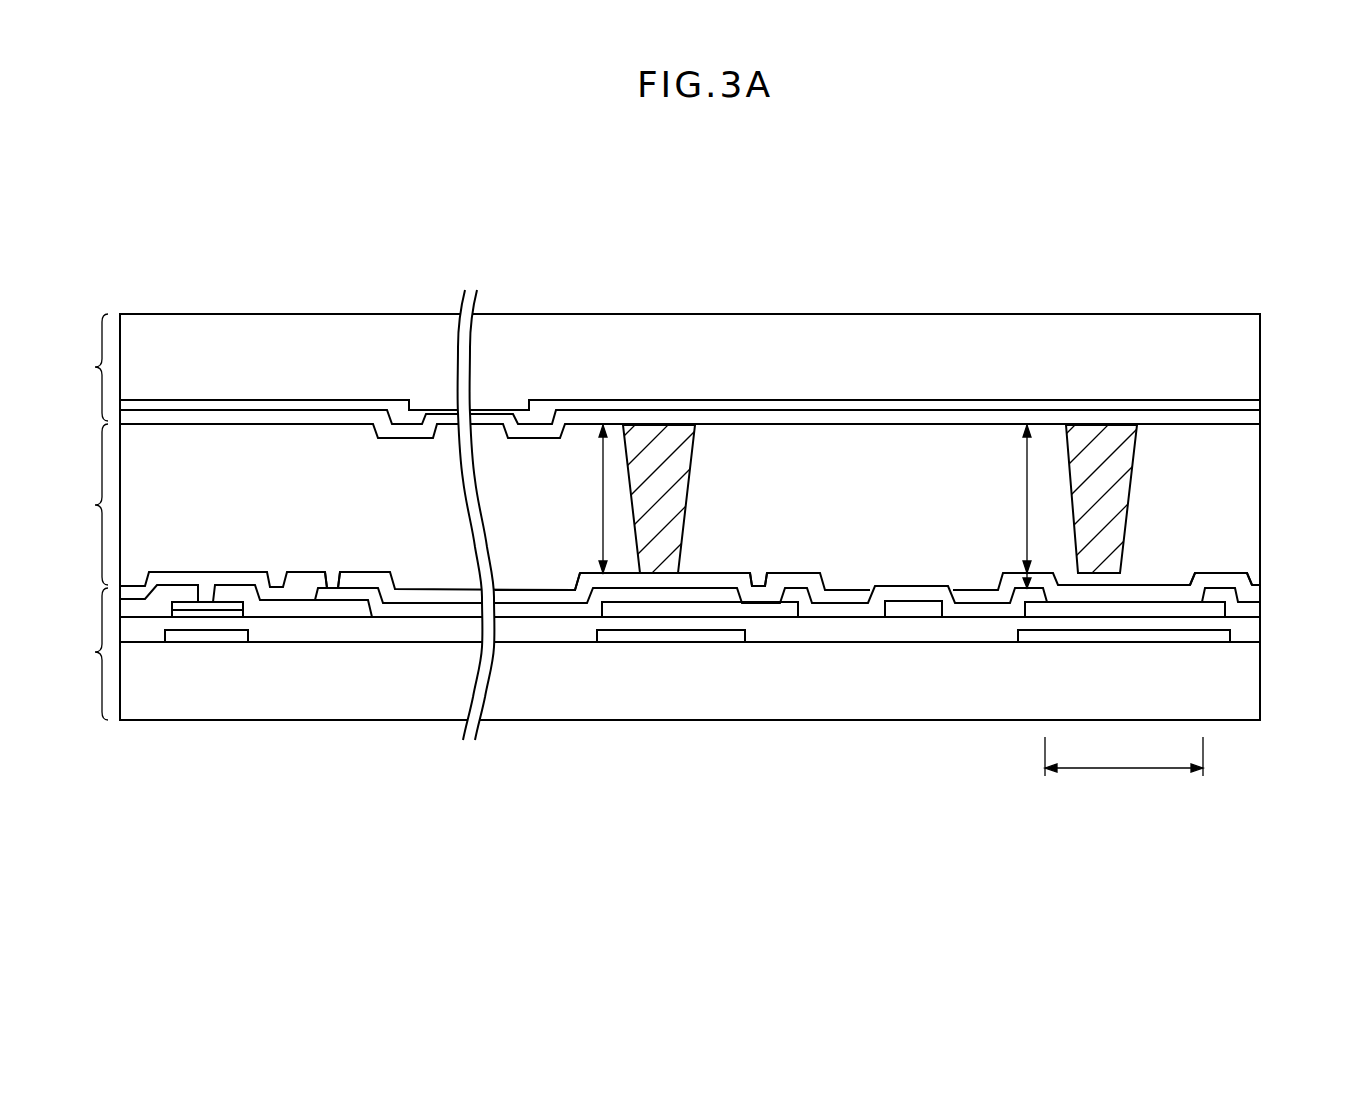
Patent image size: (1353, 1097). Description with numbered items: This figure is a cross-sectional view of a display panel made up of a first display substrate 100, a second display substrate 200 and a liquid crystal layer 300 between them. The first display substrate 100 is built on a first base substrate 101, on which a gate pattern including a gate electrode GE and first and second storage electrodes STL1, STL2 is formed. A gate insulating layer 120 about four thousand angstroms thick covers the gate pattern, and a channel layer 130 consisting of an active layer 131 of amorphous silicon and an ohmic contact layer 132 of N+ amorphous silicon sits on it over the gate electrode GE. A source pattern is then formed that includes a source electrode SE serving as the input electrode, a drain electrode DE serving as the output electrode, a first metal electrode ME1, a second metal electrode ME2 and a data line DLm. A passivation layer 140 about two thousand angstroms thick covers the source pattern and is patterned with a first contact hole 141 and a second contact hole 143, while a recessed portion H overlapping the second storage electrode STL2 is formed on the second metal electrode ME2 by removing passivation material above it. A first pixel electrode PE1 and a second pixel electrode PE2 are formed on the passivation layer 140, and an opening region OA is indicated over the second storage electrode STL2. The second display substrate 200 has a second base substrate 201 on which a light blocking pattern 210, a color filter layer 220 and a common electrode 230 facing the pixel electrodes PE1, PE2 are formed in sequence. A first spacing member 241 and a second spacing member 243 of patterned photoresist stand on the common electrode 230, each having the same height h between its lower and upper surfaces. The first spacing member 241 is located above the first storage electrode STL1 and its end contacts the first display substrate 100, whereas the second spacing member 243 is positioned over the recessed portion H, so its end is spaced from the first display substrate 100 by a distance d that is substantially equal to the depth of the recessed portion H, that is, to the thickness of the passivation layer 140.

The second display substrate 200 is at (697, 351).
The second base substrate 201 is at (1250, 353).
The light blocking pattern 210 is at (1250, 402).
The color filter layer 220 is at (498, 403).
The common electrode 230 is at (1250, 418).
The liquid crystal layer 300 is at (636, 484).
The first spacing member 241 is at (680, 484).
The second spacing member 243 is at (1118, 470).
The first display substrate 100 is at (697, 668).
The first base substrate 101 is at (1250, 667).
The gate insulating layer 120 is at (1245, 633).
The channel layer 130 is at (230, 714).
The active layer 131 is at (224, 613).
The ohmic contact layer 132 is at (233, 604).
The passivation layer 140 is at (1245, 605).
The first contact hole 141 is at (335, 577).
The second contact hole 143 is at (764, 583).
The source electrode SE is at (143, 608).
The gate electrode GE is at (186, 637).
The drain electrode DE is at (318, 610).
The first pixel electrode PE1 is at (527, 596).
The second pixel electrode PE2 is at (1210, 576).
The first storage electrode STL1 is at (650, 636).
The second storage electrode STL2 is at (1186, 636).
The first metal electrode ME1 is at (738, 596).
The second metal electrode ME2 is at (1203, 607).
The data line DLm is at (910, 608).
The opening area OA is at (1124, 756).
The distance between lower and upper surfaces of spacing member h is at (807, 499).
The distance between second spacing member and first display substrate d is at (1027, 582).
The recessed portion H is at (1172, 578).